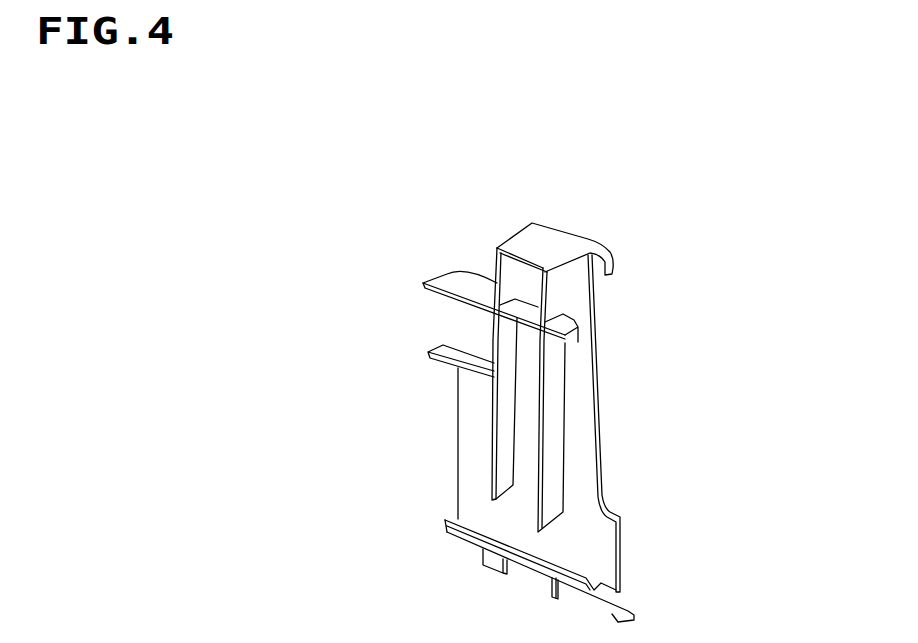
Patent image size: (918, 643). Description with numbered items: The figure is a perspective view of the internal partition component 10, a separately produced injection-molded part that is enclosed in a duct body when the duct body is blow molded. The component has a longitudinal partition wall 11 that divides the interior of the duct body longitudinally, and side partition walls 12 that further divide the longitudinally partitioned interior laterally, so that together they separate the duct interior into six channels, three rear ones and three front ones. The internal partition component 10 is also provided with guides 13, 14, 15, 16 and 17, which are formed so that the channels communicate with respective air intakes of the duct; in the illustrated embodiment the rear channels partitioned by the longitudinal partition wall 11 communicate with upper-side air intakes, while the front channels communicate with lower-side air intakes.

The internal partition component 10 is at (663, 305).
The longitudinal partition wall 11 is at (473, 435).
The side partition walls 12 is at (535, 516).
The guide 13 is at (445, 280).
The guide 14 is at (548, 236).
The guide 15 is at (445, 350).
The guide 16 is at (527, 305).
The guide 17 is at (578, 324).